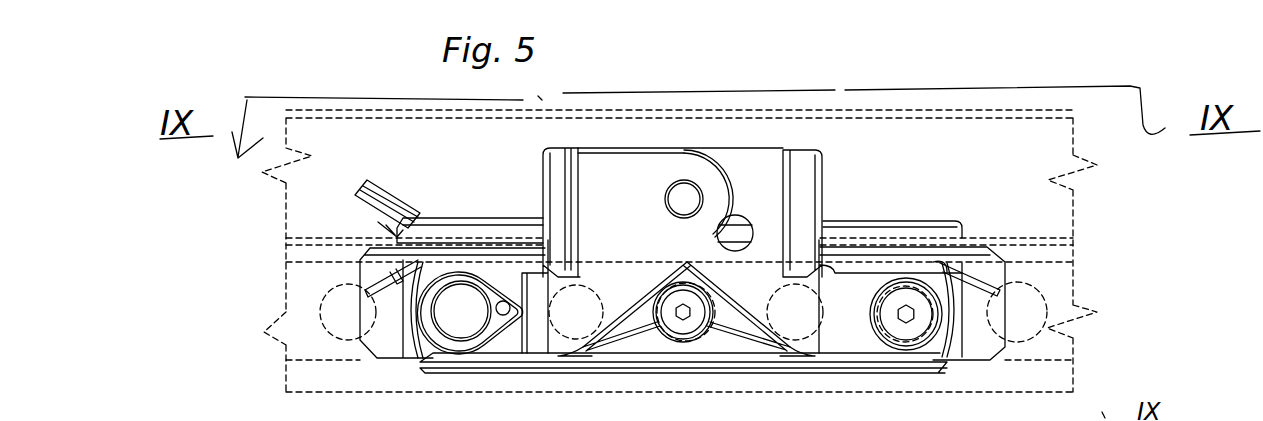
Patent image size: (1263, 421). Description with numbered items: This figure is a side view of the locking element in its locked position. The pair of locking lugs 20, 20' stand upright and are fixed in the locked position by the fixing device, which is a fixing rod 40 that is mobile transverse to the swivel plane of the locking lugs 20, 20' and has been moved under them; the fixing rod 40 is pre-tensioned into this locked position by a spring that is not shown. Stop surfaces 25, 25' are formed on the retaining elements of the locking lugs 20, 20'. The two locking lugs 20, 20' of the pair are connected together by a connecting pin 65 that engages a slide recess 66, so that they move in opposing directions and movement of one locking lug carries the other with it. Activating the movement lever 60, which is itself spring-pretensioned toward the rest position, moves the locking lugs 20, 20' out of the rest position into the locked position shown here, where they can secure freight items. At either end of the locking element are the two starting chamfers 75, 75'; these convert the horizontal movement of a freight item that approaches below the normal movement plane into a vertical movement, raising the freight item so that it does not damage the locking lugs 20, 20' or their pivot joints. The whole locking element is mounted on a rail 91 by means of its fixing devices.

The locking lug 20 is at (470, 217).
The locking lug 20' is at (892, 223).
The stop surface 25 is at (519, 211).
The stop surface 25' is at (844, 213).
The fixing rod 40 is at (680, 347).
The movement lever 60 is at (365, 178).
The connecting pin 65 is at (682, 181).
The slide recess 66 is at (647, 290).
The starting chamfer 75 is at (357, 300).
The starting chamfer 75' is at (1001, 301).
The rail 91 is at (1050, 208).